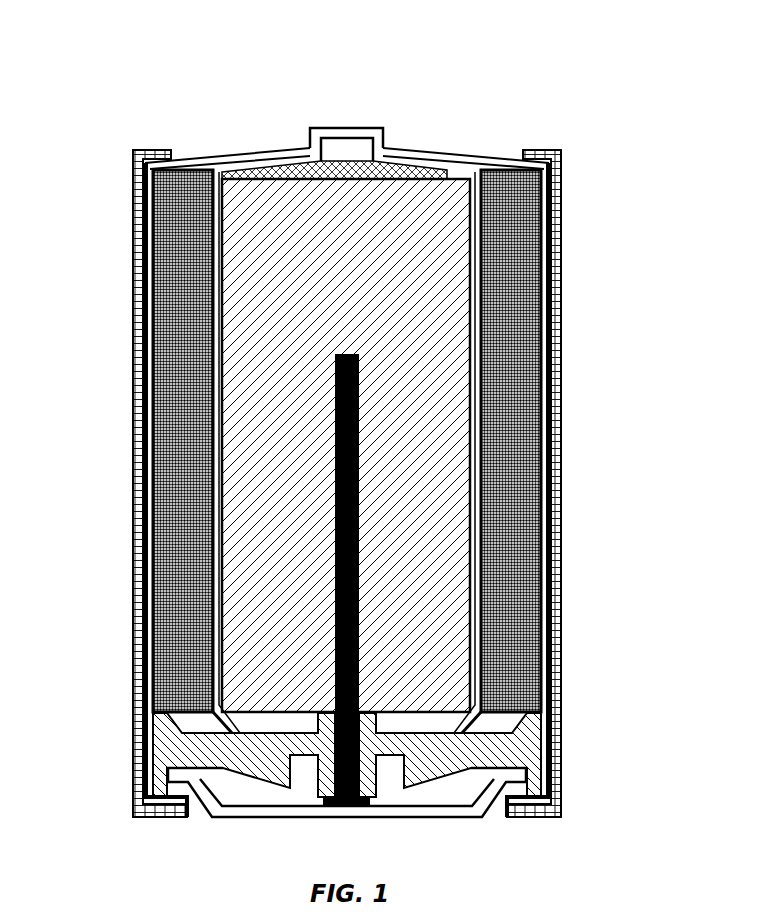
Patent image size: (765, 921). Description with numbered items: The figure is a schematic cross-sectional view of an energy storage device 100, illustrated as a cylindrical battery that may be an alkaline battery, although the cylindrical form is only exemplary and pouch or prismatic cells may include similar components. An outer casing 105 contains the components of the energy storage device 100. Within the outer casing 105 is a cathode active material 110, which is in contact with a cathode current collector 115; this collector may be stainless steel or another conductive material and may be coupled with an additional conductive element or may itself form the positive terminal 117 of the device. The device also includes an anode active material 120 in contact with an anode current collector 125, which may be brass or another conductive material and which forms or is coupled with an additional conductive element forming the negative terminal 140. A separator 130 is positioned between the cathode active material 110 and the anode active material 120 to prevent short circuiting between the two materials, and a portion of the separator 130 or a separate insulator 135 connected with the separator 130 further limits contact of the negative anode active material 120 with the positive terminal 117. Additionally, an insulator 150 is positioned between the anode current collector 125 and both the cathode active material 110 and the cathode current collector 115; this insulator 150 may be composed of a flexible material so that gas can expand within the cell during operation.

The energy storage device 100 is at (160, 78).
The outer casing 105 is at (562, 237).
The cathode active material 110 is at (562, 312).
The cathode current collector 115 is at (563, 278).
The positive terminal 117 is at (327, 128).
The anode active material 120 is at (230, 177).
The anode current collector 125 is at (325, 807).
The separator 130 is at (452, 165).
The insulator 135 is at (382, 153).
The negative terminal 140 is at (455, 818).
The insulator 150 is at (540, 742).